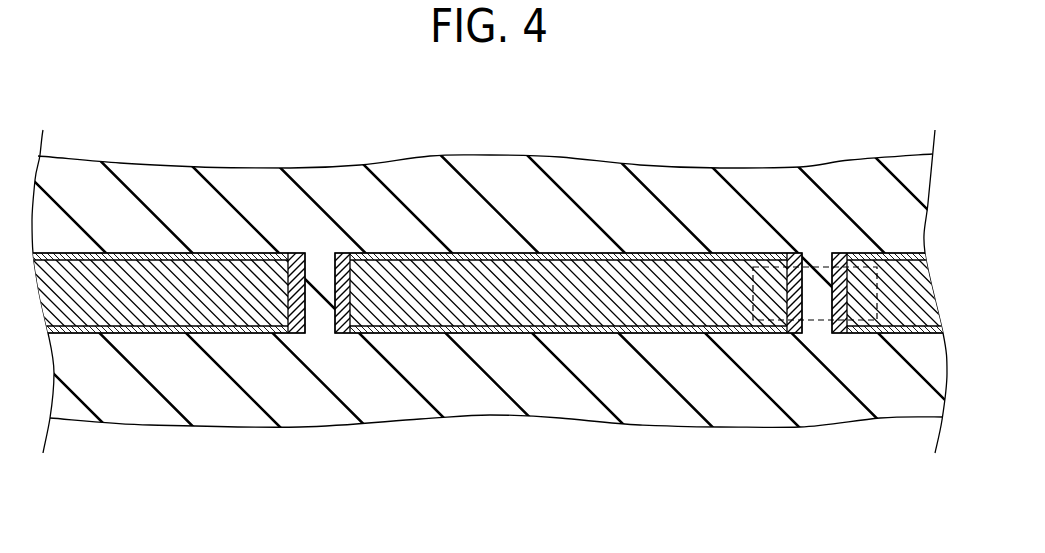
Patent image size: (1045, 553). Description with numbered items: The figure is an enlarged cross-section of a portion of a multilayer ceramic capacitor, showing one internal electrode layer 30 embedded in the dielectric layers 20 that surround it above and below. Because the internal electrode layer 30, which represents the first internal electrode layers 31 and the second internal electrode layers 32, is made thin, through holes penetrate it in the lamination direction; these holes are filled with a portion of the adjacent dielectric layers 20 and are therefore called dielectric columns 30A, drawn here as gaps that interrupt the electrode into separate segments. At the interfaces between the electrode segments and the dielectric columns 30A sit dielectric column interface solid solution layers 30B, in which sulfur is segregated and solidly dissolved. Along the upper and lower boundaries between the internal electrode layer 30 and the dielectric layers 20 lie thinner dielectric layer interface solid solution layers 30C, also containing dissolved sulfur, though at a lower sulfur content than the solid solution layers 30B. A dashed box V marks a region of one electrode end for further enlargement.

The dielectric layer 20 is at (683, 180).
The internal electrode layer 30 is at (122, 280).
The first internal electrode layer 31 is at (564, 293).
The second internal electrode layer 32 is at (564, 293).
The dielectric column 30A is at (320, 236).
The dielectric column interface solid solution layer 30B is at (297, 322).
The dielectric layer interface solid solution layer 30C is at (203, 253).
The region V (enlarged view) V is at (782, 322).